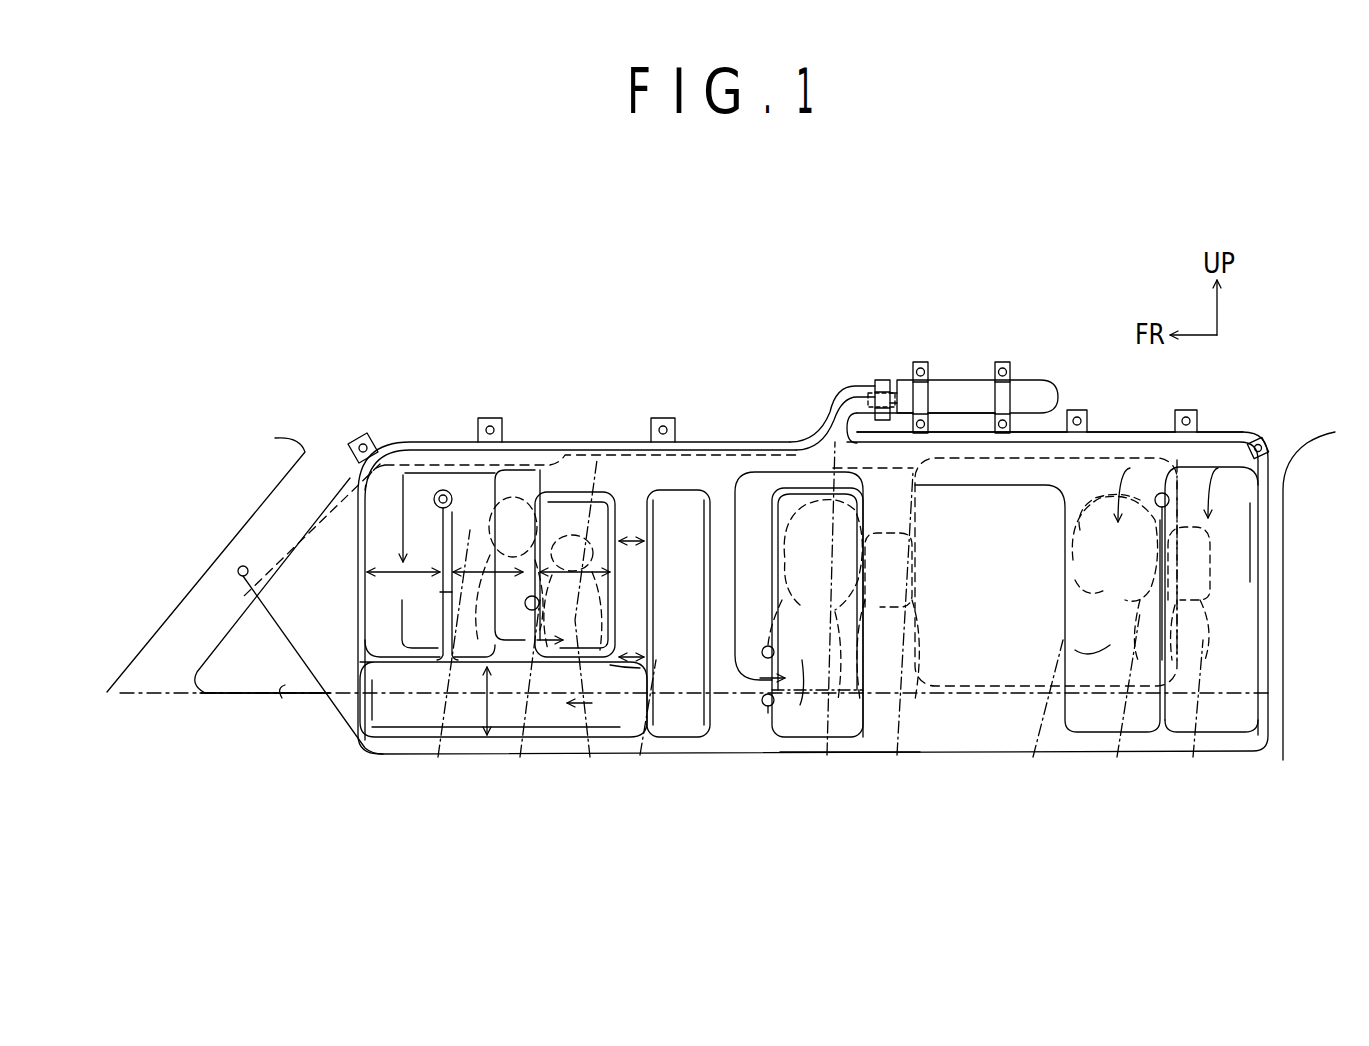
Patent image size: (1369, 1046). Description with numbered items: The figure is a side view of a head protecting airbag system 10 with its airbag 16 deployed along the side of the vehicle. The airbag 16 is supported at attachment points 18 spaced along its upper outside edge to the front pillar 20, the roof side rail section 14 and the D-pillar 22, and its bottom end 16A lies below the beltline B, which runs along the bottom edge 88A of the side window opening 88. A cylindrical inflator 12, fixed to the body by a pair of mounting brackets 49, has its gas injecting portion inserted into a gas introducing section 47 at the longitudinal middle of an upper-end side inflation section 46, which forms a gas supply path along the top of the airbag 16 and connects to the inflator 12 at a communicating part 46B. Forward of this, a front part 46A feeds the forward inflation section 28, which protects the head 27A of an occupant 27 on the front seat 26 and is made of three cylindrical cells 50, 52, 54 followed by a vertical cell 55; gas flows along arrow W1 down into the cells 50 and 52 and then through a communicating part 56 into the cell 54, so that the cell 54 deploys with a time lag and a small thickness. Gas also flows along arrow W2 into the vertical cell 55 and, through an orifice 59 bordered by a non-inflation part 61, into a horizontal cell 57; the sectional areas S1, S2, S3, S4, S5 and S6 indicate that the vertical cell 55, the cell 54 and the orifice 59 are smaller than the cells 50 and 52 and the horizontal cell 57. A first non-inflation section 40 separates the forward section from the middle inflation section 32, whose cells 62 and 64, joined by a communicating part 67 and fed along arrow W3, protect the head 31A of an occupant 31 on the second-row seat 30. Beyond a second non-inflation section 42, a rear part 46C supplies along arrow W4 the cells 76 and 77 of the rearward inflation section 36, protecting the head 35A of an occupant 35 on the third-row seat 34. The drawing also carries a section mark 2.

The head protecting airbag system 10 is at (986, 336).
The inflator 12 is at (957, 395).
The roof side rail section 14 is at (1152, 420).
The airbag 16 is at (724, 428).
The bottom end of the airbag 16A is at (862, 752).
The attachment points 18 is at (361, 440).
The front pillar 20 is at (177, 615).
The D-pillar 22 is at (1283, 502).
The front seat 26 is at (594, 764).
The occupant 27 is at (437, 760).
The head 27A is at (388, 578).
The forward inflation section 28 is at (356, 600).
The second-row seat 30 is at (816, 748).
The occupant 31 is at (742, 760).
The head 31A is at (815, 502).
The middle inflation section 32 is at (705, 710).
The third-row seat 34 is at (1200, 757).
The occupant 35 is at (1043, 762).
The head 35A is at (1073, 515).
The rearward inflation section 36 is at (1060, 608).
The first non-inflation section 40 is at (687, 500).
The second non-inflation section 42 is at (932, 713).
The upper-end side inflation section 46 is at (937, 478).
The front part of the upper-end side inflation section 46A is at (590, 460).
The communicating part 46B is at (838, 437).
The rear part of the upper-end side inflation section 46C is at (1097, 448).
The gas introducing section 47 is at (852, 397).
The mounting brackets 49 is at (913, 398).
The cell 50 is at (375, 549).
The cell 52 is at (460, 520).
The cell 54 is at (555, 515).
The vertical cell 55 is at (627, 522).
The communicating part 56 is at (504, 701).
The horizontal cell 57 is at (549, 722).
The orifice 59 is at (640, 667).
The non-inflation part 61 is at (603, 683).
The cell 62 is at (725, 621).
The cell 64 is at (790, 696).
The communicating part 67 is at (758, 713).
The cell 76 is at (1080, 648).
The cell 77 is at (1243, 618).
The side window opening 88 is at (238, 678).
The bottom edge 88A is at (282, 698).
The section line 2 is at (470, 388).
The beltline B is at (147, 694).
The sectional area of the vertical cell S1 is at (640, 557).
The sectional area of cell 50 S2 is at (387, 622).
The sectional area of cell 52 S3 is at (442, 620).
The sectional area of cell 54 S4 is at (605, 590).
The sectional area of the orifice S5 is at (640, 703).
The sectional area of the horizontal cell S6 is at (493, 705).
The arrow W1 is at (497, 508).
The arrow W2 is at (647, 540).
The arrow W3 is at (737, 498).
The arrow W4 is at (1184, 559).